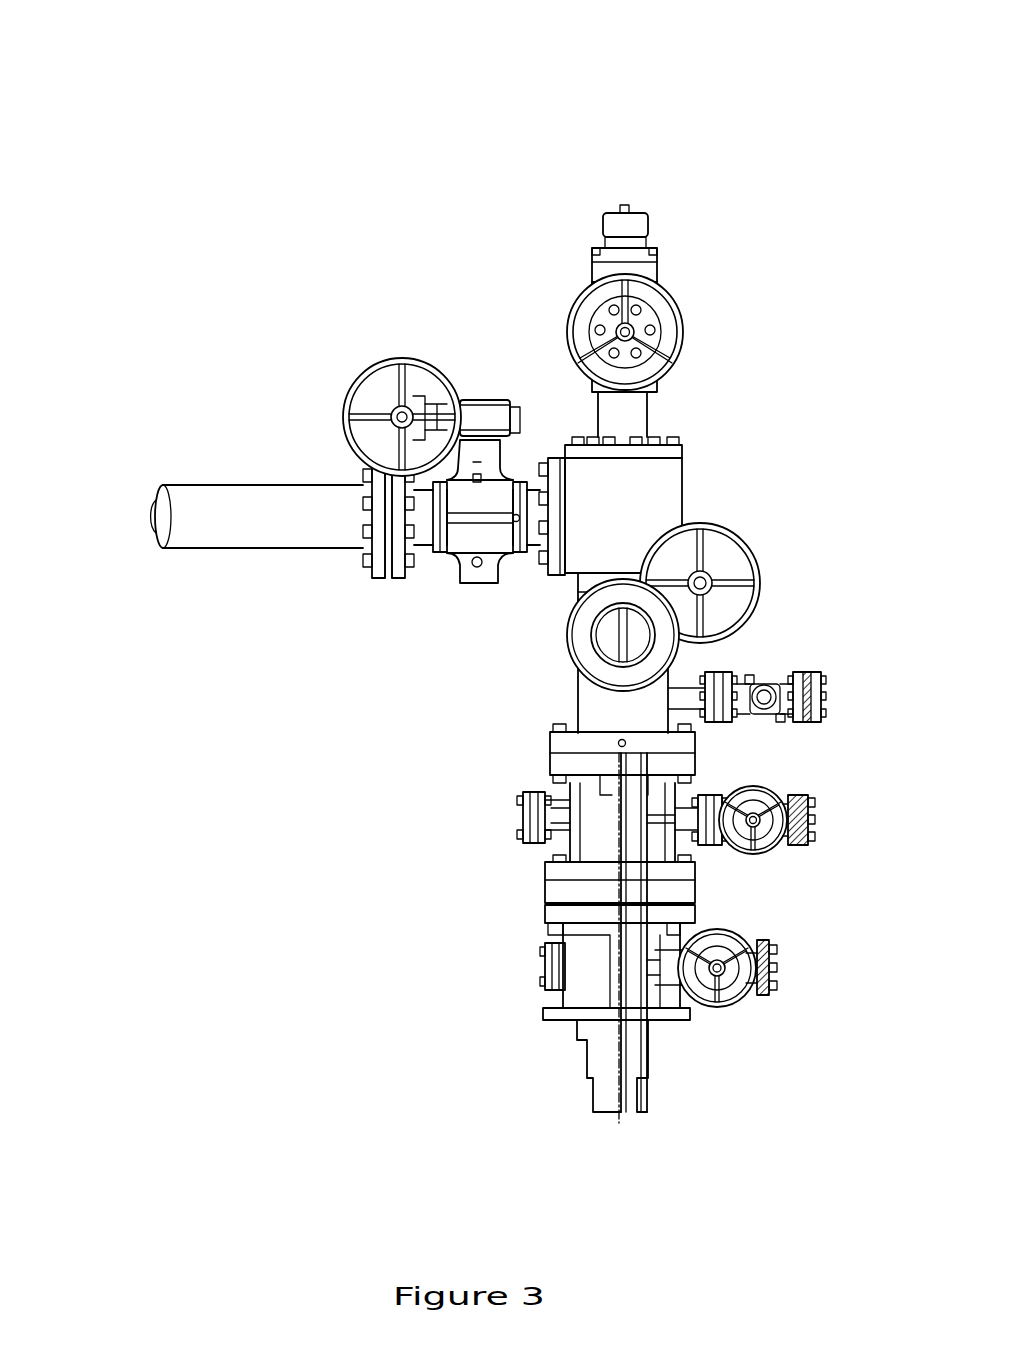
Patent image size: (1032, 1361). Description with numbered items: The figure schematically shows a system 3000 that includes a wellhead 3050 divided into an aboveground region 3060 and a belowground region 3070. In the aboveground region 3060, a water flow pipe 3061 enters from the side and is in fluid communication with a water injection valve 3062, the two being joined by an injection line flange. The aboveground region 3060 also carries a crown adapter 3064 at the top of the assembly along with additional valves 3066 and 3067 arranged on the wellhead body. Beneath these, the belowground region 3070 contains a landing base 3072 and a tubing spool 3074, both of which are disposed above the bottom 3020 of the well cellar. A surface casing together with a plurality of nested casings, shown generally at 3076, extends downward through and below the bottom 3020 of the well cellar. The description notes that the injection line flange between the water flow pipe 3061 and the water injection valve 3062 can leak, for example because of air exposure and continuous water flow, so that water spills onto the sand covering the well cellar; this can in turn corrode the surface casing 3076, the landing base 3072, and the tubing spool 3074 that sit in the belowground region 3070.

The system 3000 is at (235, 72).
The bottom of the well cellar 3020 is at (685, 1022).
The wellhead 3050 is at (833, 629).
The aboveground region 3060 is at (154, 203).
The water flow pipe 3061 is at (263, 485).
The water injection valve 3062 is at (402, 358).
The crown adapter 3064 is at (612, 205).
The additional valve 3066 is at (740, 537).
The additional valve 3067 is at (682, 304).
The belowground region 3070 is at (154, 708).
The landing base 3072 is at (740, 933).
The tubing spool 3074 is at (773, 790).
The surface casing and nested casings 3076 is at (573, 1071).